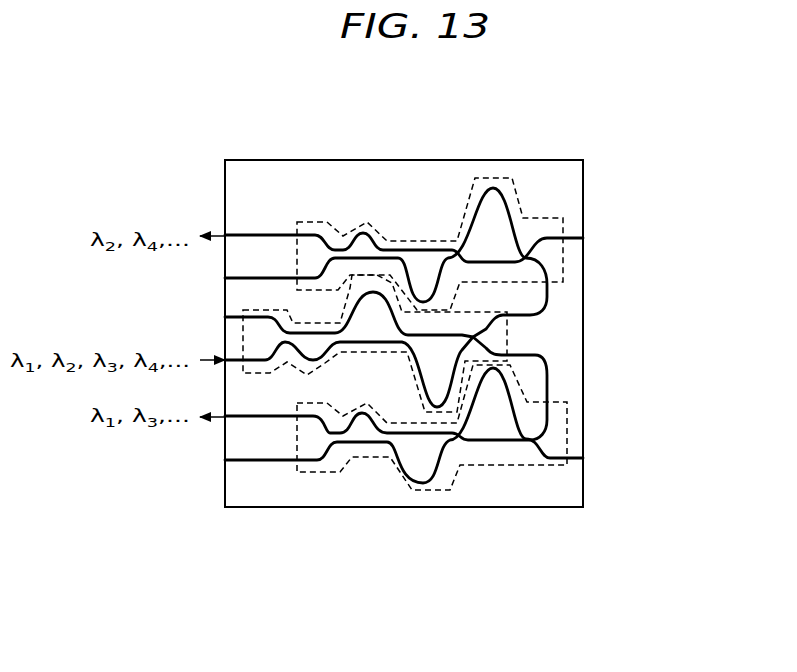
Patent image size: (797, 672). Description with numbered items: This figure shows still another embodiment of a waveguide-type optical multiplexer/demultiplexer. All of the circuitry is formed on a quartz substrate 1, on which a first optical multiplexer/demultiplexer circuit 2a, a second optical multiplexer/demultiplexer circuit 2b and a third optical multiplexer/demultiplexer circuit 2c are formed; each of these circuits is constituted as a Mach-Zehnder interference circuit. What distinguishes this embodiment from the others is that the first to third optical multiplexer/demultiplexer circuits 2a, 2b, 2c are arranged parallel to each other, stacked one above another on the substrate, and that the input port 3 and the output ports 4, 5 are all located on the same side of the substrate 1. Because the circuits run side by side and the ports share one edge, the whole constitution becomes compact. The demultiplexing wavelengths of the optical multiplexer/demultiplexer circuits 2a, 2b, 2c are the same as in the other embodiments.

The quartz substrate 1 is at (248, 490).
The first optical multiplexer/demultiplexer circuit 2a is at (508, 338).
The second optical multiplexer/demultiplexer circuit 2b is at (517, 198).
The third optical multiplexer/demultiplexer circuit 2c is at (507, 467).
The input port 3 is at (223, 357).
The output port 4 is at (218, 422).
The output port 5 is at (220, 233).